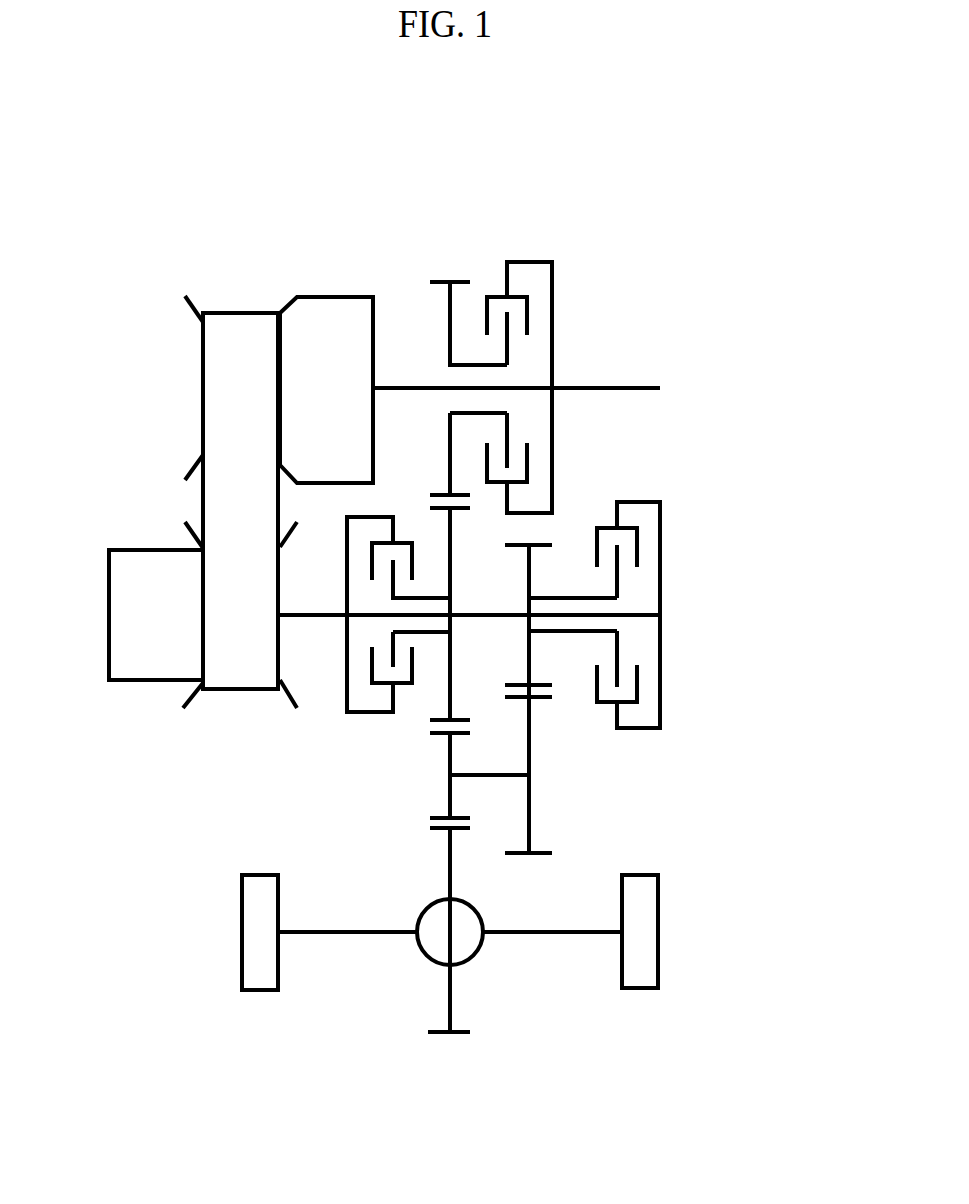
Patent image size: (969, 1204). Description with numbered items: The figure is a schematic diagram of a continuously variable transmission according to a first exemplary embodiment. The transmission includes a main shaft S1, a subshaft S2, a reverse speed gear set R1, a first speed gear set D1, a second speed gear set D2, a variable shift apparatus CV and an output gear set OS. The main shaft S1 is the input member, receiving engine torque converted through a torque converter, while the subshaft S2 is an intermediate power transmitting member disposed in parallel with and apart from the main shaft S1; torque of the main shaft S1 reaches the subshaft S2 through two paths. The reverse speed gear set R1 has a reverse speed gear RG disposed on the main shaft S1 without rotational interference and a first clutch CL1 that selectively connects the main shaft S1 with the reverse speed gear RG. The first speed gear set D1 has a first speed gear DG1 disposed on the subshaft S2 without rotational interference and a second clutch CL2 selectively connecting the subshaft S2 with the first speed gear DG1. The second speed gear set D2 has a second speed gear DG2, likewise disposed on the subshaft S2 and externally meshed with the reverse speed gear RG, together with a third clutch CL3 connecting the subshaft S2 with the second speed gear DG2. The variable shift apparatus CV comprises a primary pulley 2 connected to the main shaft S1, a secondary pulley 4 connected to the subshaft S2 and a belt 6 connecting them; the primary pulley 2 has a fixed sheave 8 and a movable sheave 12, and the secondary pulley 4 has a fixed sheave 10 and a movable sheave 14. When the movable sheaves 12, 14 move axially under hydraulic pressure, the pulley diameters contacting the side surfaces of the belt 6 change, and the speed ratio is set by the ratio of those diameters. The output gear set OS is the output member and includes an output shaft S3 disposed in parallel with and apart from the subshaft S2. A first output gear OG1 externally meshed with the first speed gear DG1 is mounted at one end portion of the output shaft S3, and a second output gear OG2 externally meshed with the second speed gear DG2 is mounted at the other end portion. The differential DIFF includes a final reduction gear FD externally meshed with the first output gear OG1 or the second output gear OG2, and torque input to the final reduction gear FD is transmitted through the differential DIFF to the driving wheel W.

The primary pulley 2 is at (279, 317).
The movable sheave 12 is at (193, 307).
The fixed sheave 8 is at (327, 325).
The belt 6 is at (213, 503).
The variable shift apparatus CV is at (162, 451).
The secondary pulley 4 is at (201, 682).
The fixed sheave 10 is at (136, 668).
The movable sheave 14 is at (287, 697).
The main shaft S1 is at (590, 386).
The reverse speed gear RG is at (447, 313).
The first clutch CL1 is at (499, 294).
The reverse speed gear set R1 is at (563, 280).
The second speed gear set D2 is at (353, 730).
The third clutch CL3 is at (372, 668).
The first speed gear DG1 is at (529, 572).
The first speed gear set D1 is at (676, 543).
The second clutch CL2 is at (628, 527).
The subshaft S2 is at (638, 618).
The output shaft S3 is at (500, 777).
The first output gear OG1 is at (533, 740).
The second output gear OG2 is at (452, 757).
The output gear set OS is at (580, 772).
The second speed gear DG2 is at (447, 692).
The final reduction gear FD is at (447, 866).
The differential DIFF is at (486, 970).
The driving wheel W is at (648, 934).